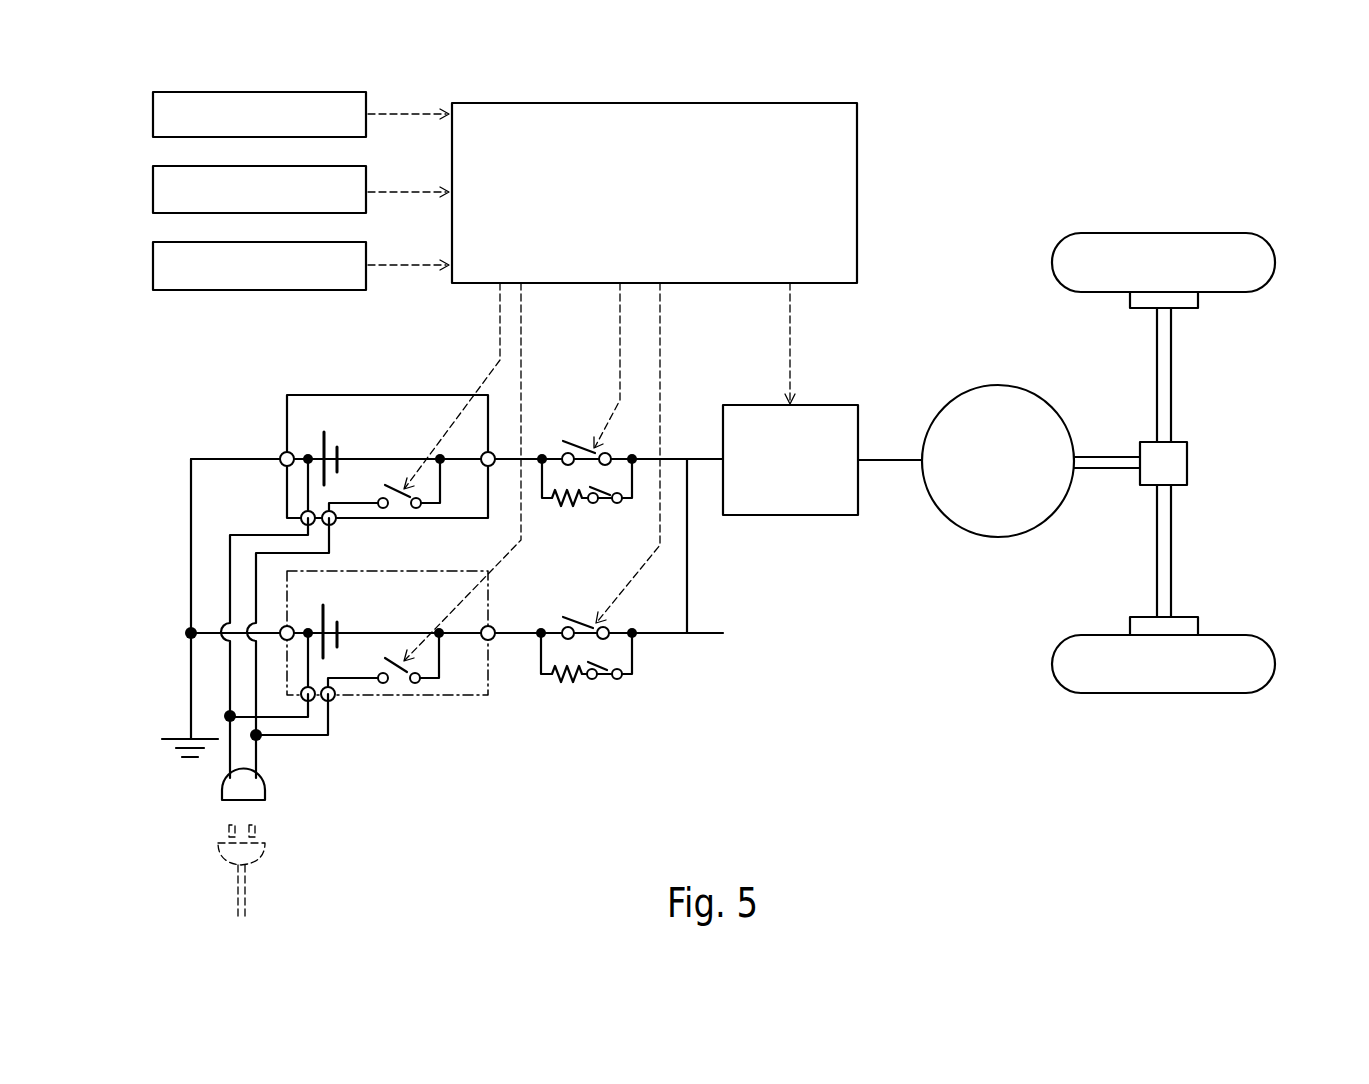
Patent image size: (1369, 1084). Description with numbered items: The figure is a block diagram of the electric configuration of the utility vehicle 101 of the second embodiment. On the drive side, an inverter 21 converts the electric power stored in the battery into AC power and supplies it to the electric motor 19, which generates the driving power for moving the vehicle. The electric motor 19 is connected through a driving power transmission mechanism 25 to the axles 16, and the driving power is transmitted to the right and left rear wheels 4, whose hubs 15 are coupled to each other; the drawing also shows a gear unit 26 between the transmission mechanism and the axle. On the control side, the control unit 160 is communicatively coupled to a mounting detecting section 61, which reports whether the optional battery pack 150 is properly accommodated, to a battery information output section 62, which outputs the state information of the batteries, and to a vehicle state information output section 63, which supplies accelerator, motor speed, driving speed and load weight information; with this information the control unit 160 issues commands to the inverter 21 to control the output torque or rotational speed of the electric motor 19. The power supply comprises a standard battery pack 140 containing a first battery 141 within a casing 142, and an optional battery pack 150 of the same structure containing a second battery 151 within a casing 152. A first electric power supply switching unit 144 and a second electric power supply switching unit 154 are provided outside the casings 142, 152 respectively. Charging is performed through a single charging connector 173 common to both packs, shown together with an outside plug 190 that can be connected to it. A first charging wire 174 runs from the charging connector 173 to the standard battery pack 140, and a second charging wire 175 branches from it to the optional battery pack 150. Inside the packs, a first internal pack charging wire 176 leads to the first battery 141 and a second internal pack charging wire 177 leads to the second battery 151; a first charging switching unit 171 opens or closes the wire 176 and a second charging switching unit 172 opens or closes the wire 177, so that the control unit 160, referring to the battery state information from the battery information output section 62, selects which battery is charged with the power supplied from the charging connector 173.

The rear wheel 4 is at (1257, 265).
The hub 15 is at (1198, 300).
The axle 16 is at (1171, 390).
The electric motor 19 is at (972, 530).
The inverter 21 is at (782, 515).
The driving power transmission mechanism 25 is at (1098, 455).
The gear unit 26 is at (1187, 465).
The mounting detecting section 61 is at (153, 262).
The battery information output section 62 is at (153, 187).
The vehicle state information output section 63 is at (153, 112).
The utility vehicle 101 is at (1139, 378).
The standard battery pack 140 is at (405, 440).
The first battery 141 is at (310, 445).
The casing 142 is at (377, 413).
The first electric power supply switching unit 144 is at (572, 440).
The optional battery pack 150 is at (454, 679).
The second battery 151 is at (325, 612).
The casing 152 is at (387, 700).
The second electric power supply switching unit 154 is at (570, 617).
The control unit 160 is at (857, 195).
The first charging switching unit 171 is at (423, 510).
The second charging switching unit 172 is at (425, 670).
The charging connector 173 is at (222, 790).
The first charging wire 174 is at (222, 587).
The second charging wire 175 is at (294, 752).
The first internal pack charging wire 176 is at (425, 492).
The second internal pack charging wire 177 is at (445, 657).
The charging plug 190 is at (218, 853).